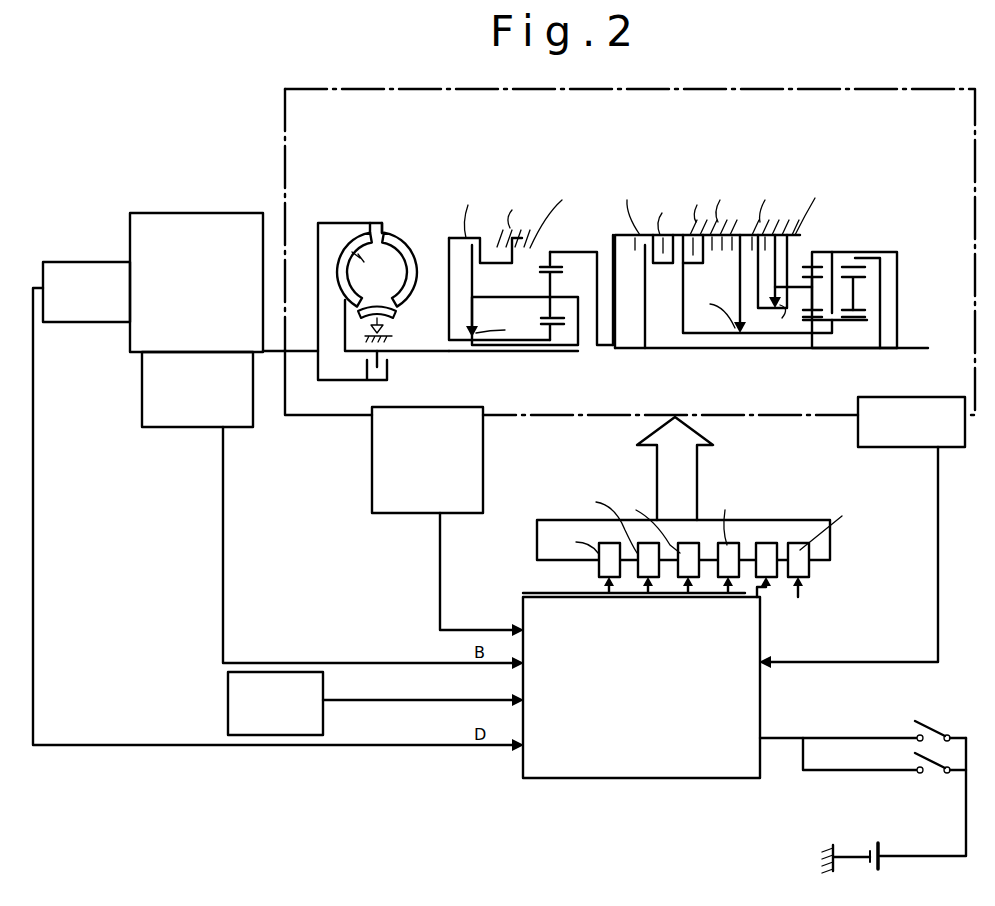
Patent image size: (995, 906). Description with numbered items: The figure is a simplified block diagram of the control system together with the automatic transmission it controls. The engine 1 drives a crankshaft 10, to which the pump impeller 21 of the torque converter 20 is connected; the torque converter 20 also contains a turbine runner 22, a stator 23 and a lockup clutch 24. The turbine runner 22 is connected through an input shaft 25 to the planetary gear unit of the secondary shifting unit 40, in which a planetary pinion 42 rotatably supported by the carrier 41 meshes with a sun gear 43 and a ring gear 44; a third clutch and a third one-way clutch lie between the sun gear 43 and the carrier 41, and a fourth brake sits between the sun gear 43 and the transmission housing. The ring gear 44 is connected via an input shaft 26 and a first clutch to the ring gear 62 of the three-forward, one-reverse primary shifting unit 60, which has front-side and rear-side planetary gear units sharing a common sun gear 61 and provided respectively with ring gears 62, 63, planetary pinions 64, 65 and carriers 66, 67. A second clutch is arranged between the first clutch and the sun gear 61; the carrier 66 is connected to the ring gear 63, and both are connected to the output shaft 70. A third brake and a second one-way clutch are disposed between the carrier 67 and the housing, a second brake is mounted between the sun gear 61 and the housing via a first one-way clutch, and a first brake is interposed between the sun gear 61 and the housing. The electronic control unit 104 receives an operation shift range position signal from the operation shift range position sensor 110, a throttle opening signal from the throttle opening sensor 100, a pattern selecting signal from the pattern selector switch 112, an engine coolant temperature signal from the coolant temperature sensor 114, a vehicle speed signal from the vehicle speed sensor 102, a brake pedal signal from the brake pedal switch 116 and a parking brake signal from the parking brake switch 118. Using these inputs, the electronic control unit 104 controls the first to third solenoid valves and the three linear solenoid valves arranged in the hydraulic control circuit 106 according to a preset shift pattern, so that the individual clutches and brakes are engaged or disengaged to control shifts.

The engine 1 is at (143, 212).
The crankshaft 10 is at (292, 355).
The torque converter 20 is at (383, 283).
The pump impeller 21 is at (389, 248).
The turbine runner 22 is at (377, 270).
The stator 23 is at (396, 315).
The lockup clutch 24 is at (354, 381).
The input shaft 25 is at (465, 353).
The input shaft 26 is at (605, 350).
The secondary shifting unit 40 is at (531, 240).
The carrier 41 is at (563, 270).
The planetary pinion 42 is at (545, 273).
The sun gear 43 is at (545, 322).
The ring gear 44 is at (556, 252).
The primary shifting unit 60 is at (772, 241).
The sun gear 61 is at (836, 320).
The ring gear 62 is at (858, 256).
The ring gear 63 is at (838, 262).
The planetary pinion 64 is at (870, 277).
The planetary pinion 65 is at (822, 302).
The carrier 66 is at (866, 305).
The carrier 67 is at (803, 262).
The output shaft 70 is at (911, 349).
The throttle opening sensor 100 is at (156, 416).
The vehicle speed sensor 102 is at (878, 448).
The electronic control unit 104 is at (628, 780).
The hydraulic control circuit 106 is at (833, 541).
The operation shift range position sensor 110 is at (485, 440).
The pattern selector switch 112 is at (228, 706).
The coolant temperature sensor 114 is at (50, 262).
The brake pedal switch 116 is at (942, 724).
The parking brake switch 118 is at (932, 777).